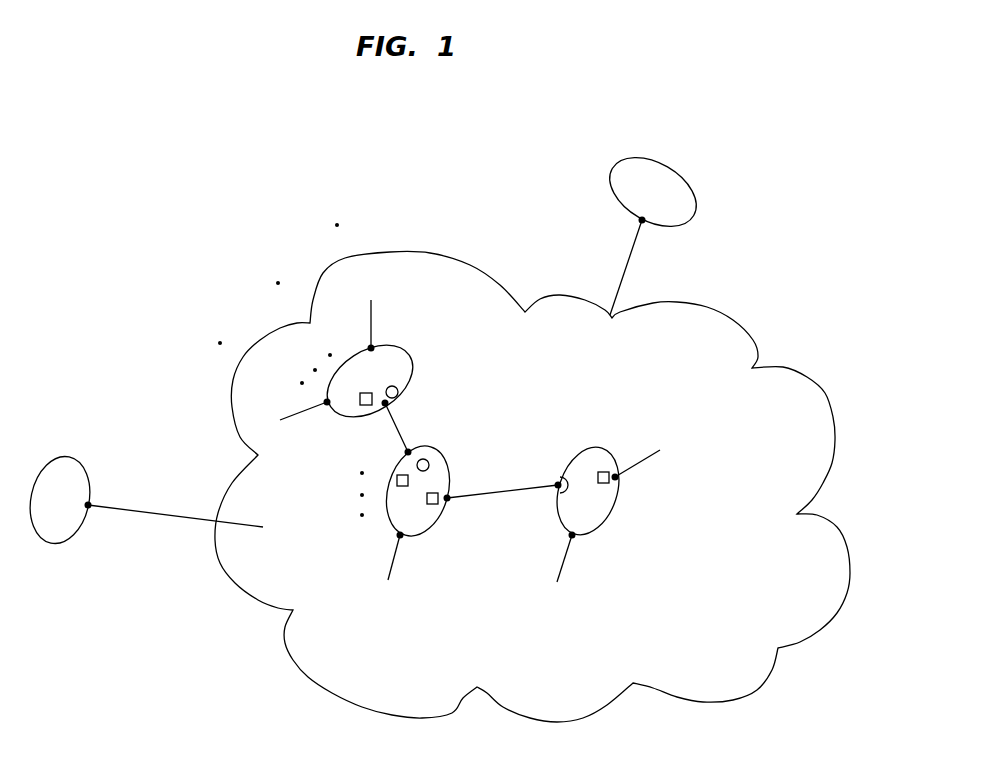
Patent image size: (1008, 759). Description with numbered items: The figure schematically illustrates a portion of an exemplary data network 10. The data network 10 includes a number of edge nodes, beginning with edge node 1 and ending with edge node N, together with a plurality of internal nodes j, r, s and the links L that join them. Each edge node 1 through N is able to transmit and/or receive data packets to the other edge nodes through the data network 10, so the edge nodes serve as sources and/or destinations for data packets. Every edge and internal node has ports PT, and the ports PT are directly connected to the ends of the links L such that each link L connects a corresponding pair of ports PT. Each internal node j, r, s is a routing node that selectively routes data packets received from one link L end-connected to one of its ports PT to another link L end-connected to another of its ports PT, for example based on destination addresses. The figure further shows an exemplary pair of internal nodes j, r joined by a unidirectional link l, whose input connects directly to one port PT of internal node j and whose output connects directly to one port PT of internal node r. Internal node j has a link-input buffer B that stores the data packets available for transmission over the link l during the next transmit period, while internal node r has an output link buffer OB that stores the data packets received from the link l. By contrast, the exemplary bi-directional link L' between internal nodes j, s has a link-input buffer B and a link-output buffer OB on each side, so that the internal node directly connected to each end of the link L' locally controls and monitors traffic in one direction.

The data network 10 is at (532, 486).
The edge node 1 is at (59, 500).
The edge node N is at (653, 191).
The port PT is at (645, 224).
The link L is at (381, 413).
The bi-directional link L' is at (407, 419).
The unidirectional link l is at (503, 488).
The output link buffer OB is at (385, 388).
The link-input buffer B is at (363, 407).
The internal node s is at (412, 353).
The internal node j is at (450, 483).
The internal node r is at (585, 533).